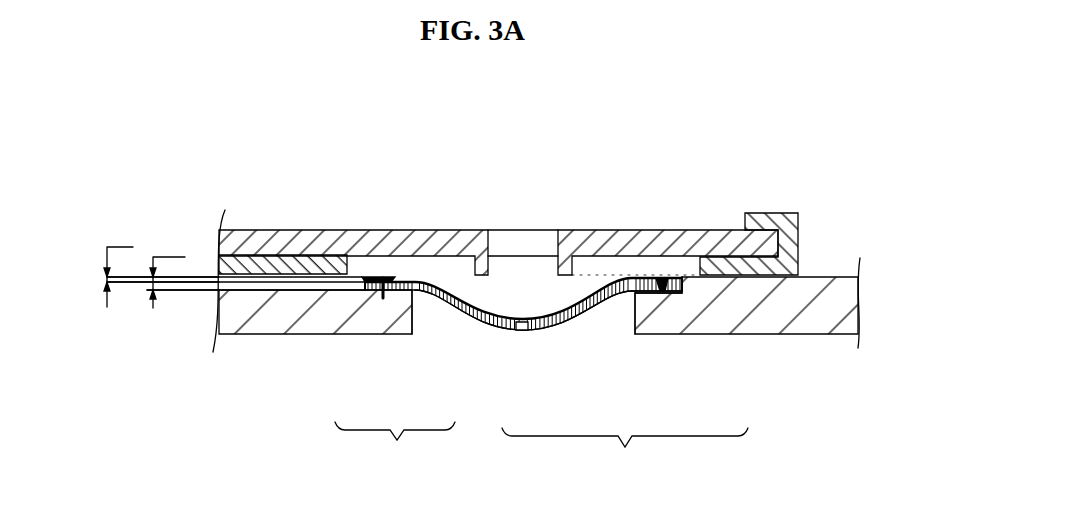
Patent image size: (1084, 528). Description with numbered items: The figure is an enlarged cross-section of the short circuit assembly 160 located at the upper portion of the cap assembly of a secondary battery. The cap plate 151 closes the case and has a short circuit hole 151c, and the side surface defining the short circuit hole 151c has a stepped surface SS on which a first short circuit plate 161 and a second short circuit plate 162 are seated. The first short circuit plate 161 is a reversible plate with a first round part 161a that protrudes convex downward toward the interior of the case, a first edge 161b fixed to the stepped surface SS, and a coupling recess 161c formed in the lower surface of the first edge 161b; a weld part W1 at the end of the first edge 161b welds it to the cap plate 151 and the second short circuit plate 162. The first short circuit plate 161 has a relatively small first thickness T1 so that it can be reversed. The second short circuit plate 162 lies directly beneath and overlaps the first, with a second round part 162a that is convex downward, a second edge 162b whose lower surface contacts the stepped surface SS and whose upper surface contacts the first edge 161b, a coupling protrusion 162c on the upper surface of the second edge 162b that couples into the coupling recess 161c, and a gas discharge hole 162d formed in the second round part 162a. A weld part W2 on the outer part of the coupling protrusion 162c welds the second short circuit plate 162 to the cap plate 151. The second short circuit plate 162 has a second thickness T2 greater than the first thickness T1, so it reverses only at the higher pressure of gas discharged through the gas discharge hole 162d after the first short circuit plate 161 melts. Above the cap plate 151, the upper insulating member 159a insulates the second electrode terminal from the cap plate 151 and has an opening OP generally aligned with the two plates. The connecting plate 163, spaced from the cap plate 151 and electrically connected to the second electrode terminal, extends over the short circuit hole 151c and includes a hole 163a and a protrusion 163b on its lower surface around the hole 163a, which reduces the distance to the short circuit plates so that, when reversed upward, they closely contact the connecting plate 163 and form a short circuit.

The short circuit assembly 160 is at (755, 176).
The upper insulating member 159a is at (297, 262).
The weld part W1 is at (364, 278).
The weld part W2 is at (384, 278).
The protrusion 163b is at (448, 248).
The hole 163a is at (528, 246).
The short circuit hole 151c is at (606, 280).
The connecting plate 163 is at (498, 219).
The opening OP is at (686, 270).
The first thickness T1 is at (161, 265).
The second thickness T2 is at (183, 270).
The cap plate 151 is at (538, 288).
The first edge 161b is at (376, 294).
The first round part 161a is at (453, 312).
The coupling recess 161c is at (389, 284).
The first short circuit plate 161 is at (394, 373).
The gas discharge hole 162d is at (521, 332).
The second round part 162a is at (560, 333).
The second edge 162b is at (643, 300).
The coupling protrusion 162c is at (655, 300).
The second short circuit plate 162 is at (561, 377).
The stepped surface SS is at (669, 298).